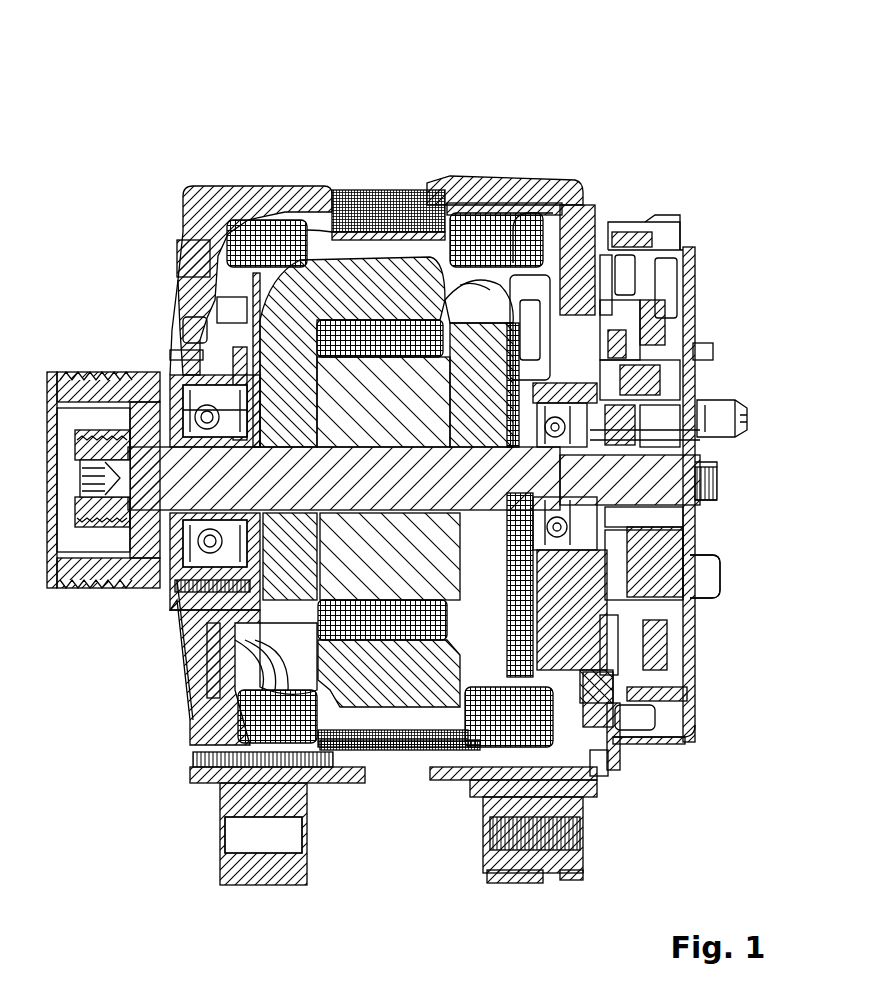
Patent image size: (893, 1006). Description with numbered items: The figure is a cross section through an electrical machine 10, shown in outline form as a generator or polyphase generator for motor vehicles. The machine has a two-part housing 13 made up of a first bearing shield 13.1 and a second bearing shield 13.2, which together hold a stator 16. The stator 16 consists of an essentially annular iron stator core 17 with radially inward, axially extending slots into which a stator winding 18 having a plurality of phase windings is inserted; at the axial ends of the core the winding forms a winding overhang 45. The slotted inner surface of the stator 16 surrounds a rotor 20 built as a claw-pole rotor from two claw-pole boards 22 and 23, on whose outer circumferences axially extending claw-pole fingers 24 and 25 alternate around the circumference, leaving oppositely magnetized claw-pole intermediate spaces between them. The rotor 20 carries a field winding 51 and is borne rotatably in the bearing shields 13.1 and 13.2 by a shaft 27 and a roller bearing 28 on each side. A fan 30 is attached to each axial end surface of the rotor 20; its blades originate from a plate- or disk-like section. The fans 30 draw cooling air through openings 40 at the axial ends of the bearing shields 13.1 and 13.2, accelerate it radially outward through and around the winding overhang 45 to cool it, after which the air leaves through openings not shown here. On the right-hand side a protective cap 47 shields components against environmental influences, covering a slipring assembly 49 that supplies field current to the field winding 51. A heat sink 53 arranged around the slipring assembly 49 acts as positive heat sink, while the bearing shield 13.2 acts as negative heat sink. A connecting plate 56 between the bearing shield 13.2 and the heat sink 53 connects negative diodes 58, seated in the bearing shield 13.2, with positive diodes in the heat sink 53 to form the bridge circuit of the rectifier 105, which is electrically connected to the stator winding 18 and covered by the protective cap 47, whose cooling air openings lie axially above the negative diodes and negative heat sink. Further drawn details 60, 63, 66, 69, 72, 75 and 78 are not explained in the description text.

The electrical machine 10 is at (623, 96).
The housing 13 is at (166, 166).
The first bearing shield 13.1 is at (228, 188).
The second bearing shield 13.2 is at (560, 188).
The stator 16 is at (368, 158).
The stator core 17 is at (346, 192).
The stator winding 18 is at (478, 203).
The rotor 20 is at (205, 686).
The claw-pole board 22 is at (255, 383).
The claw-pole board 23 is at (422, 675).
The claw-pole fingers 24 is at (387, 192).
The claw-pole fingers 25 is at (440, 255).
The shaft 27 is at (148, 505).
The roller bearing 28 is at (203, 428).
The fan 30 is at (210, 302).
The openings 40 is at (195, 332).
The winding overhang 45 is at (270, 220).
The protective cap 47 is at (690, 663).
The slipring assembly 49 is at (668, 510).
The field winding 51 is at (393, 630).
The heat sink 53 is at (652, 322).
The connecting plate 56 is at (640, 630).
The negative diodes 58 is at (605, 705).
The fan blade 60 is at (322, 645).
The fan 63 is at (215, 634).
The bearing seat 66 is at (545, 262).
The terminal 69 is at (700, 395).
The screw 72 is at (692, 458).
The stator slot 75 is at (298, 220).
The field winding 78 is at (418, 330).
The rectifier 105 is at (686, 768).